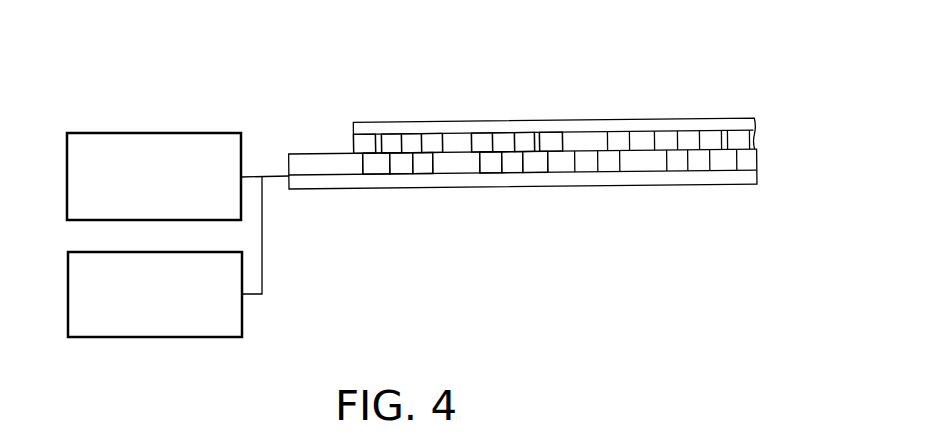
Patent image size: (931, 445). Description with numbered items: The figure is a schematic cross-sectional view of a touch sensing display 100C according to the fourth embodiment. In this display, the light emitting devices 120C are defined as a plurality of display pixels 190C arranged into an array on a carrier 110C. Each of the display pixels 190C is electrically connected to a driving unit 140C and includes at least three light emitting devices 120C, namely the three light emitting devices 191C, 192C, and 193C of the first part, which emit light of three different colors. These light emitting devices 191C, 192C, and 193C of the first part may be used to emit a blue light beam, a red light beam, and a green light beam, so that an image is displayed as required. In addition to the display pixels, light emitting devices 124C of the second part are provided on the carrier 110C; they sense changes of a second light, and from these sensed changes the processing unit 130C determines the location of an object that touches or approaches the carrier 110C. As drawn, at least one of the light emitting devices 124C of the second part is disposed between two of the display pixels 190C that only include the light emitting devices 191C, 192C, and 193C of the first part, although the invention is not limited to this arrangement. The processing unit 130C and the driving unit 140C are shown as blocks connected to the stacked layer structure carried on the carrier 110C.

The touch sensing display 100C is at (767, 357).
The carrier 110C is at (326, 181).
The light emitting devices 120C is at (492, 166).
The light emitting devices of the second part 124C is at (360, 143).
The processing unit 130C is at (172, 143).
The driving unit 140C is at (165, 328).
The display pixels 190C is at (300, 50).
The light emitting device of the first part 191C is at (390, 140).
The light emitting device of the first part 192C is at (412, 140).
The light emitting device of the first part 193C is at (433, 142).